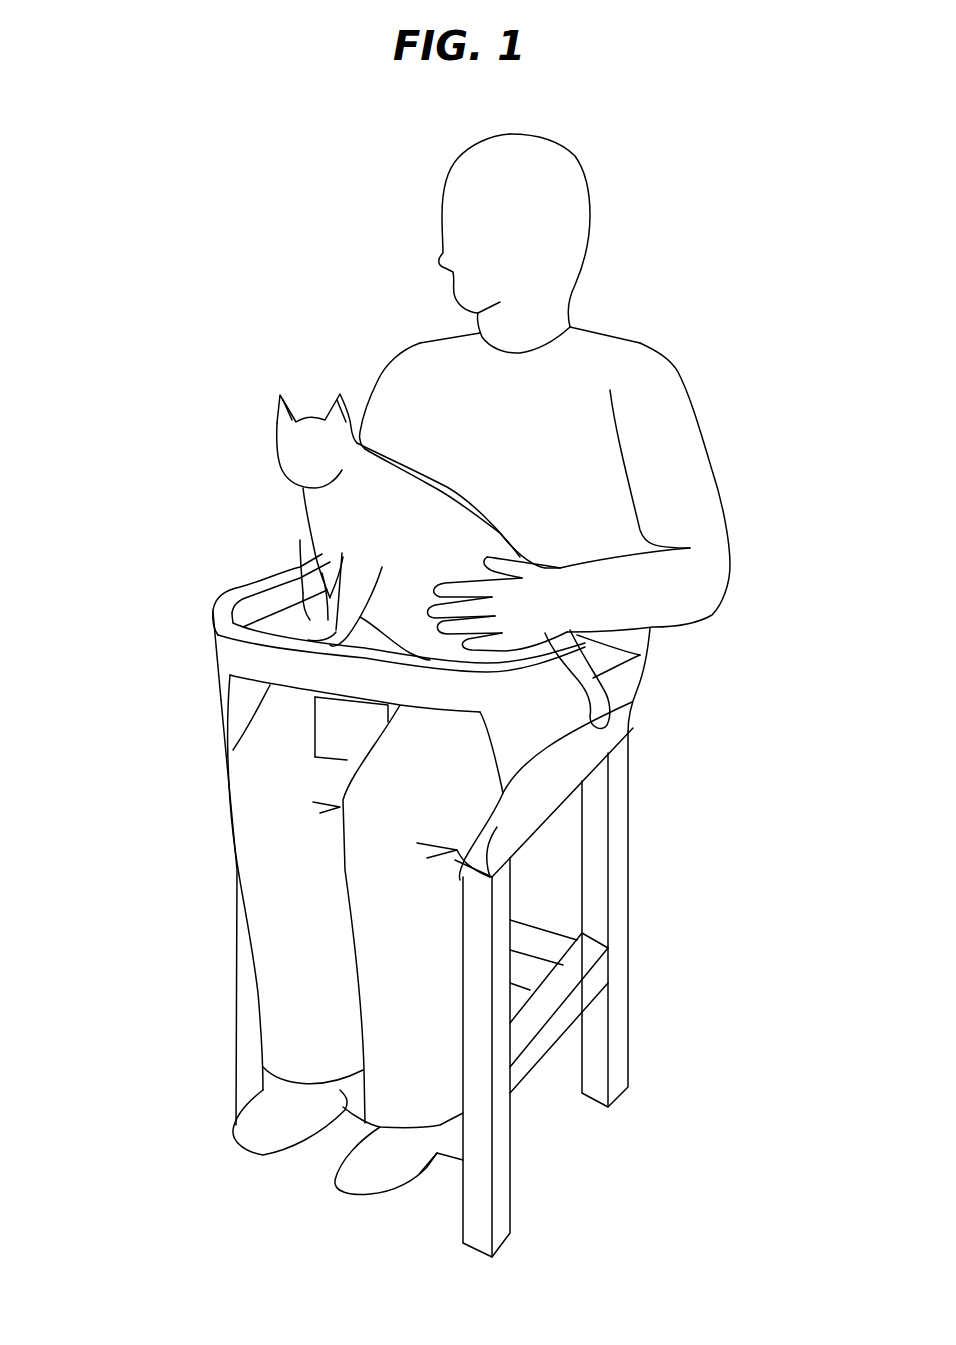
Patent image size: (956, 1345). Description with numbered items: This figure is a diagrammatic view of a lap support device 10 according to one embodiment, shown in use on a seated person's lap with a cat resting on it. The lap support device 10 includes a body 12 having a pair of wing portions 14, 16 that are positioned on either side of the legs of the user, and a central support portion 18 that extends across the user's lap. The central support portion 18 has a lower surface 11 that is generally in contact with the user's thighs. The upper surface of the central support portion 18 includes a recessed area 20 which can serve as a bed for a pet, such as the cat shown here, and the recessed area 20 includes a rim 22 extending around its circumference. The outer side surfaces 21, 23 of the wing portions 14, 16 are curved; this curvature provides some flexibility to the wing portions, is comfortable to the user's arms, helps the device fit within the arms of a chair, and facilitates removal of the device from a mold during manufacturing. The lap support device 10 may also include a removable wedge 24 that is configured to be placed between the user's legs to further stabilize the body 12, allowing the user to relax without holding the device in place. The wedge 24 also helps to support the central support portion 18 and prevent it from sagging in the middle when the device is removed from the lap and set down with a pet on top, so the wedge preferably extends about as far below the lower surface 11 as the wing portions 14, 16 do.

The lap support device 10 is at (195, 560).
The body 12 is at (227, 650).
The recessed area 20 is at (303, 588).
The rim 22 is at (263, 603).
The central support portion 18 is at (363, 683).
The outer side surface of wing 21 is at (220, 675).
The wing portion 14 is at (225, 712).
The lower surface 11 is at (310, 690).
The removable wedge 24 is at (340, 740).
The wing portion 16 is at (513, 743).
The outer side surface of wing 23 is at (627, 683).